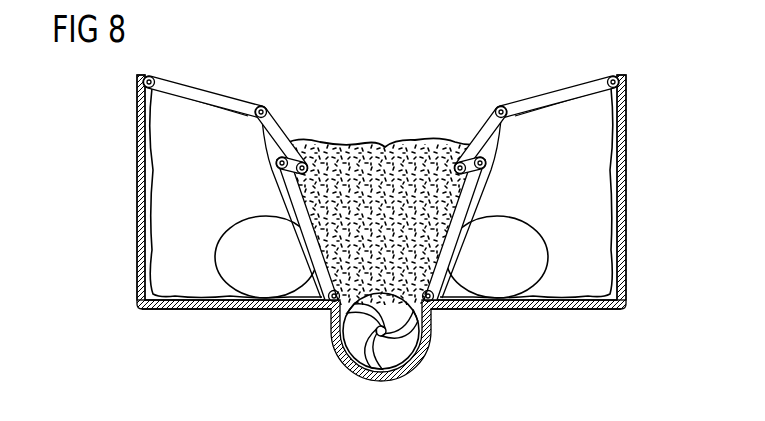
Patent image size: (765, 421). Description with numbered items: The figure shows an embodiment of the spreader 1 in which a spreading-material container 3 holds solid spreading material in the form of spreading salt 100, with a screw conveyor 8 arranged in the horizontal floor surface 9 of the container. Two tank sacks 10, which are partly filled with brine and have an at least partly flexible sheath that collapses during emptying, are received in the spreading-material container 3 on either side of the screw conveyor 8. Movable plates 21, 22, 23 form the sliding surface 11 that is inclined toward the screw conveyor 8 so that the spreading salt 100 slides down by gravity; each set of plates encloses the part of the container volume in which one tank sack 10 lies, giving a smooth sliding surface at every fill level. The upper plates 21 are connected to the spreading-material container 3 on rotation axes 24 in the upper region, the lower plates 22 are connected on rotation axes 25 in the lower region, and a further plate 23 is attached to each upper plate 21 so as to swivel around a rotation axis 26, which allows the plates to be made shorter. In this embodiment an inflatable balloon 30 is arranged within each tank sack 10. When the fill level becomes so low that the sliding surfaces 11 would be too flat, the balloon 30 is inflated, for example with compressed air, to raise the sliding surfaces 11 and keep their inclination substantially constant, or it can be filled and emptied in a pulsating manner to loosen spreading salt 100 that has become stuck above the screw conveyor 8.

The spreader 1 is at (97, 119).
The spreading-material container 3 is at (137, 250).
The screw conveyor 8 is at (400, 352).
The horizontal floor surface 9 is at (223, 310).
The tank sack 10 is at (160, 203).
The sliding surface 11 is at (297, 133).
The upper plate 21 is at (215, 104).
The lower plate 22 is at (287, 183).
The further plate 23 is at (269, 129).
The rotation axis 24 is at (153, 78).
The rotation axis 25 is at (330, 312).
The rotation axis 26 is at (262, 105).
The inflatable balloon 30 is at (225, 243).
The spreading salt 100 is at (385, 145).